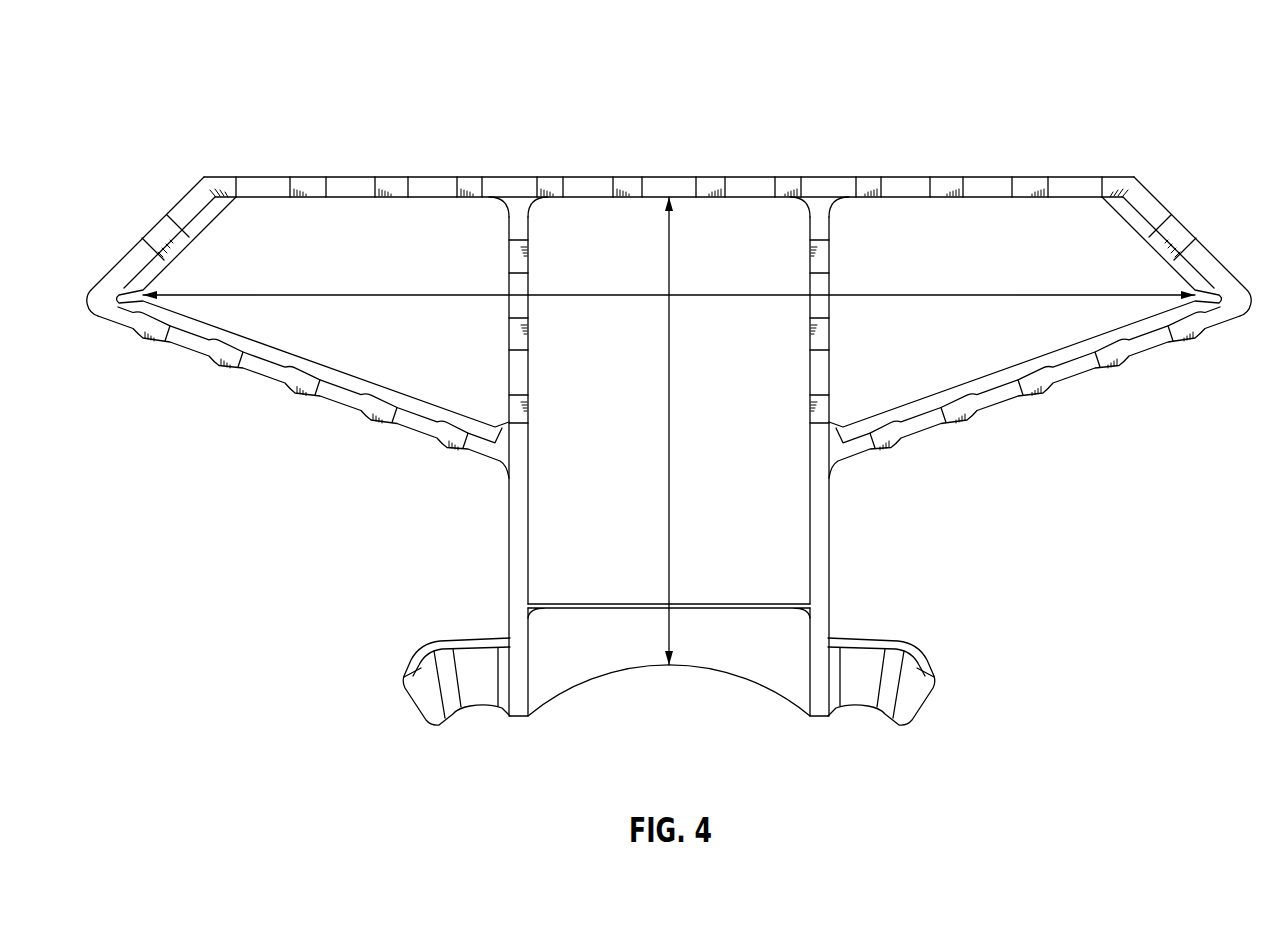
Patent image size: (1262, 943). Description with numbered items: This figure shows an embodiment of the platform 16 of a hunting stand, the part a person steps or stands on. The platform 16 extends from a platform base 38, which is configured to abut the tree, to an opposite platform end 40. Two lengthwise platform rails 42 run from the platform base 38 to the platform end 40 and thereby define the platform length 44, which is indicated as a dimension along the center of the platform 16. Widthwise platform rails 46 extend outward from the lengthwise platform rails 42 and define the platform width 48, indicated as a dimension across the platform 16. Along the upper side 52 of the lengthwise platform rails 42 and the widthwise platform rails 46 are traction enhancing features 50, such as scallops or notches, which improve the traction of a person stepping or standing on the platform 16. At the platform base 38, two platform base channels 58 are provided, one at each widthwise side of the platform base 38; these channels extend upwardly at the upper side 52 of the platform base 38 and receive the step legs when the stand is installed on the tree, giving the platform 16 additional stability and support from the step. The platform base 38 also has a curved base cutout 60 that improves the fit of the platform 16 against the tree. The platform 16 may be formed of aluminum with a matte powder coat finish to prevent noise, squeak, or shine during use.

The platform 16 is at (343, 58).
The platform base 38 is at (718, 660).
The platform end 40 is at (836, 178).
The lengthwise platform rails 42 is at (507, 533).
The platform length 44 is at (668, 465).
The widthwise platform rails 46 is at (262, 379).
The platform width 48 is at (367, 293).
The traction enhancing features 50 is at (472, 189).
The upper side 52 is at (212, 181).
The platform base channels 58 is at (473, 660).
The curved base cutout 60 is at (633, 673).